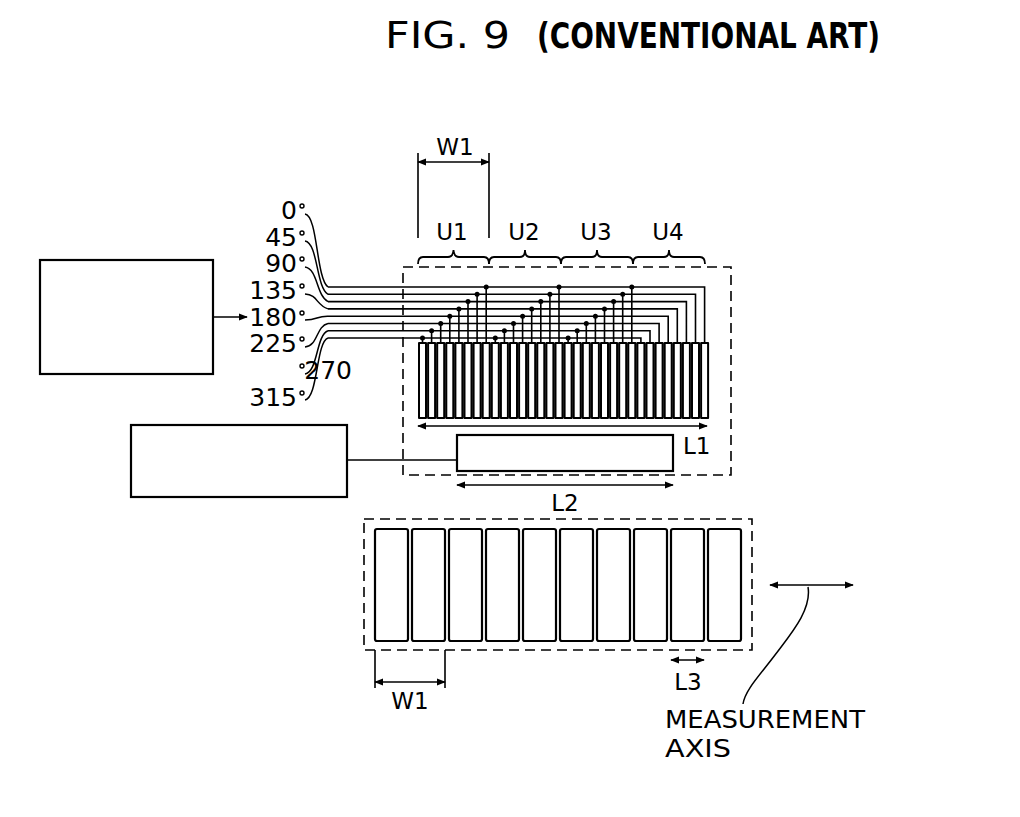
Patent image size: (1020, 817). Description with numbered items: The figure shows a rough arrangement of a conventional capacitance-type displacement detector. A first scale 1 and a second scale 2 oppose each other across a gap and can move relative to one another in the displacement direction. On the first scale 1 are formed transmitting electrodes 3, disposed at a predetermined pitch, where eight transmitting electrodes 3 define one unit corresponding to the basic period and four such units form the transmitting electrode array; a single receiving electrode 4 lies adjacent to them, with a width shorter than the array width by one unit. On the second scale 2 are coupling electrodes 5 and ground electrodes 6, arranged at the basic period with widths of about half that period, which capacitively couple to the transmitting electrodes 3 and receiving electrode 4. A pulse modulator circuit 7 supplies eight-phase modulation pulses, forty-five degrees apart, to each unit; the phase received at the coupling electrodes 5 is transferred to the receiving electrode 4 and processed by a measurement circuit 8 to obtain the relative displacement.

The first scale 1 is at (718, 290).
The second scale 2 is at (584, 607).
The transmitting electrodes 3 is at (706, 370).
The receiving electrode 4 is at (665, 458).
The coupling electrode 5 is at (615, 633).
The ground electrode 6 is at (506, 630).
The pulse modulator circuit 7 is at (147, 260).
The measurement circuit 8 is at (292, 497).